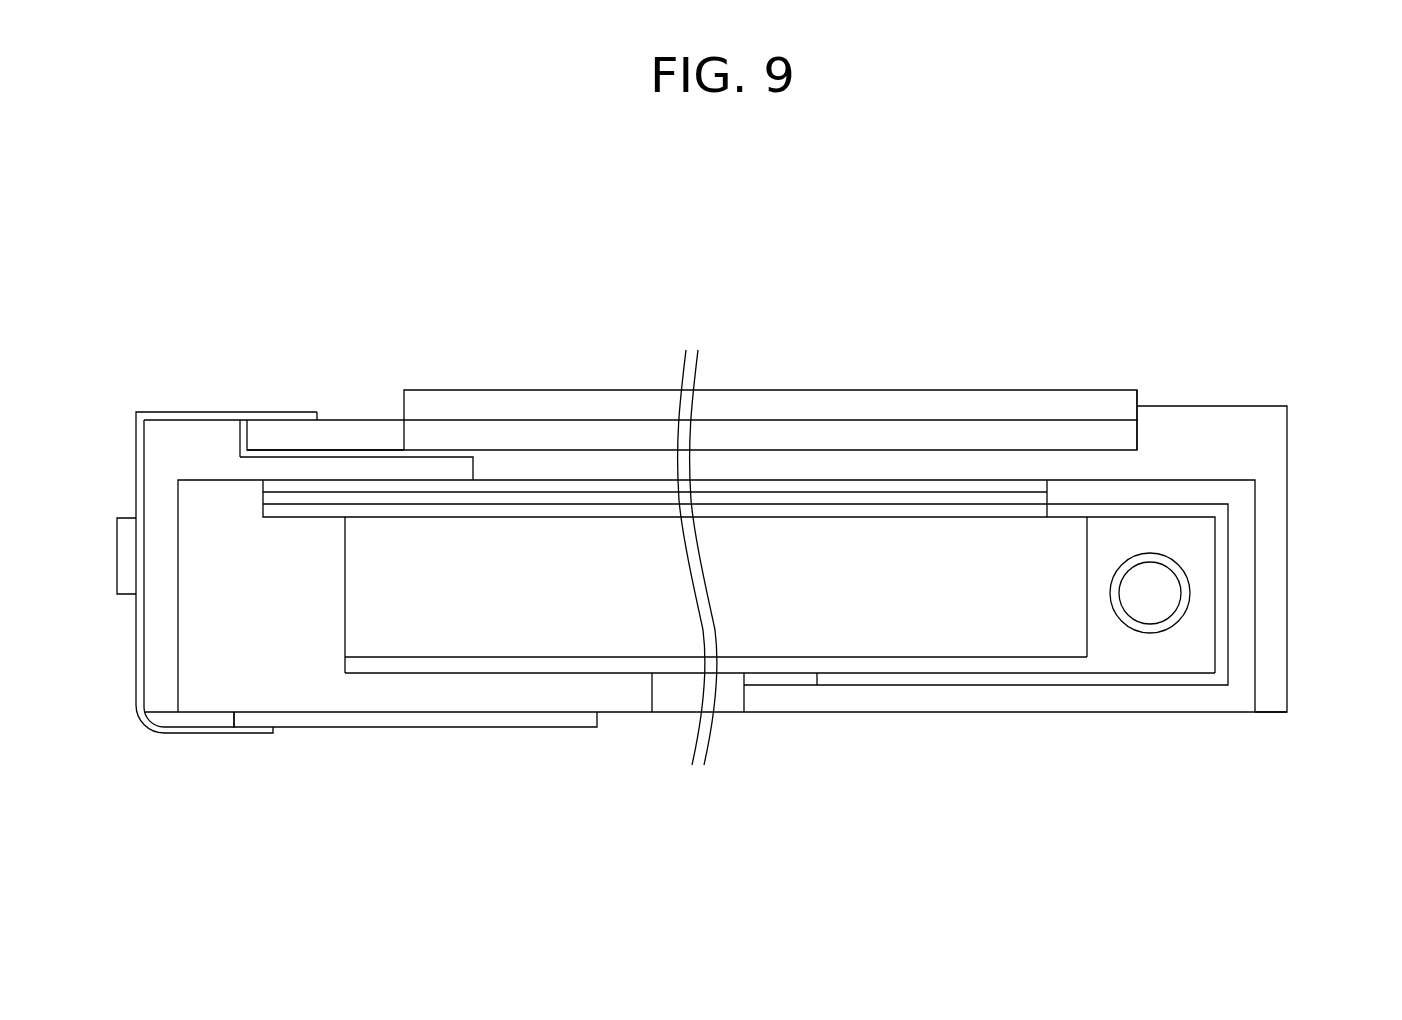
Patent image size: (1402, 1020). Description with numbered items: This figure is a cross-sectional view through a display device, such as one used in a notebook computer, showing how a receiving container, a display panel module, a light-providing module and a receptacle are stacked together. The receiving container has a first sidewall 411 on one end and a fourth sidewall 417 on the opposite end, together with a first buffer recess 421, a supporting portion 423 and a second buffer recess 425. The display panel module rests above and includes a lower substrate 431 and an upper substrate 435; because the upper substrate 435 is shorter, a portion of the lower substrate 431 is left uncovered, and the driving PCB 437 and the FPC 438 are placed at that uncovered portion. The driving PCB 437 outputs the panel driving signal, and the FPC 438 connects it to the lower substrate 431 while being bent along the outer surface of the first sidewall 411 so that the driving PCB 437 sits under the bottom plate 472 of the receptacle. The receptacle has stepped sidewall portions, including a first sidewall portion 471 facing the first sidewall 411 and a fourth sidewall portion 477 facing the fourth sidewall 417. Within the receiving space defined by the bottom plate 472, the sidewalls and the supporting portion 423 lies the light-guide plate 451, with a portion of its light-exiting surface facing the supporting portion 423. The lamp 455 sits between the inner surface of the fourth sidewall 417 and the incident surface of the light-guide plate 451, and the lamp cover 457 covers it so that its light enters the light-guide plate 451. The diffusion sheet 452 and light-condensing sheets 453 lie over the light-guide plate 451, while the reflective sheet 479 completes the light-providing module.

The first sidewall 411 is at (157, 468).
The fourth sidewall 417 is at (1273, 586).
The first buffer recess 421 is at (243, 440).
The supporting portion 423 is at (1076, 460).
The second buffer recess 425 is at (290, 452).
The lower substrate 431 is at (557, 430).
The upper substrate 435 is at (472, 398).
The driving PCB 437 is at (456, 718).
The FPC 438 is at (140, 692).
The light-guide plate 451 is at (848, 620).
The diffusion sheet 452 is at (897, 510).
The light-condensing sheets 453 is at (786, 497).
The lamp 455 is at (1148, 632).
The lamp cover 457 is at (1040, 678).
The first sidewall portion 471 is at (228, 632).
The bottom plate 472 is at (925, 695).
The fourth sidewall portion 477 is at (1245, 633).
The reflective sheet 479 is at (546, 668).